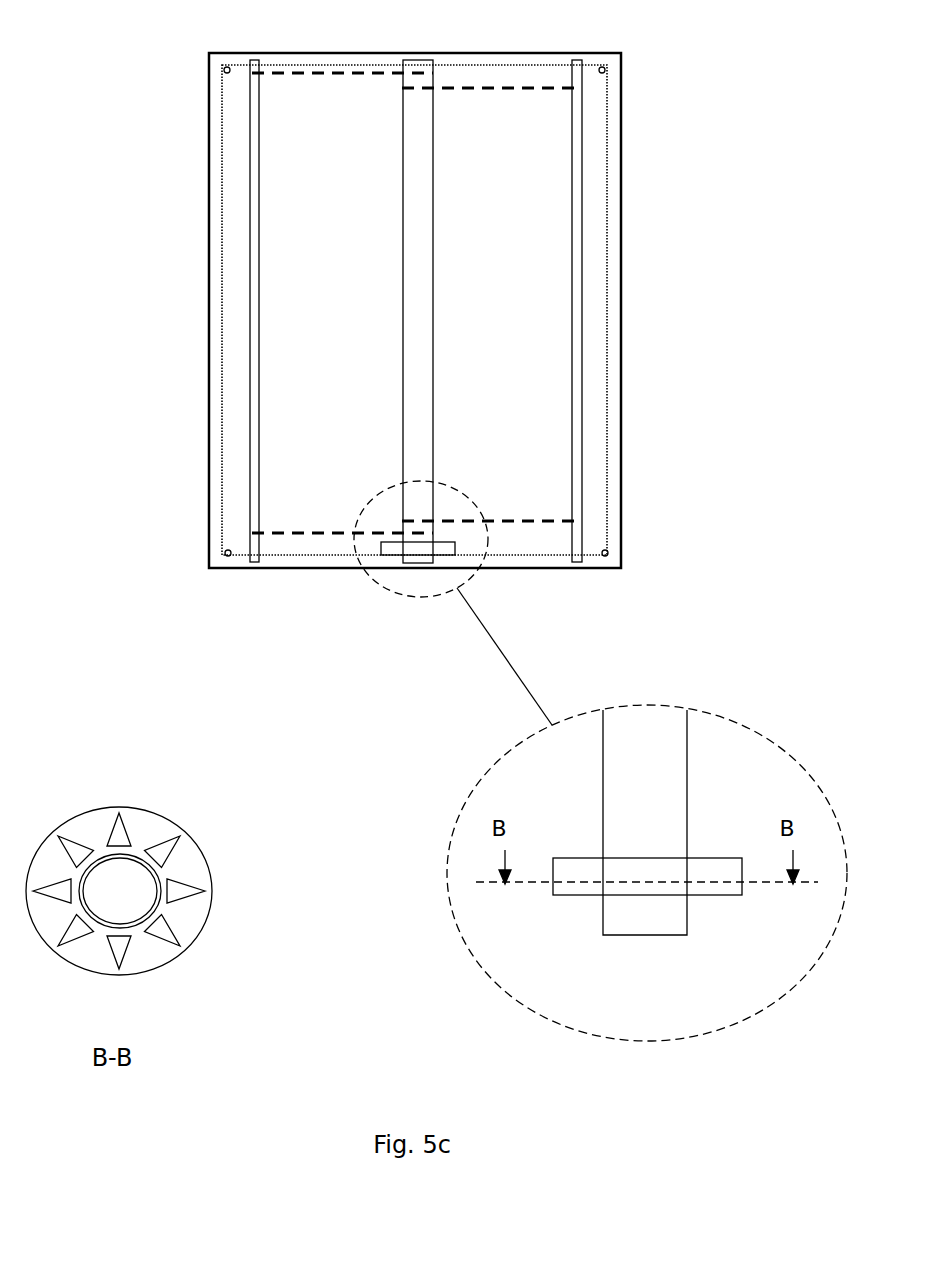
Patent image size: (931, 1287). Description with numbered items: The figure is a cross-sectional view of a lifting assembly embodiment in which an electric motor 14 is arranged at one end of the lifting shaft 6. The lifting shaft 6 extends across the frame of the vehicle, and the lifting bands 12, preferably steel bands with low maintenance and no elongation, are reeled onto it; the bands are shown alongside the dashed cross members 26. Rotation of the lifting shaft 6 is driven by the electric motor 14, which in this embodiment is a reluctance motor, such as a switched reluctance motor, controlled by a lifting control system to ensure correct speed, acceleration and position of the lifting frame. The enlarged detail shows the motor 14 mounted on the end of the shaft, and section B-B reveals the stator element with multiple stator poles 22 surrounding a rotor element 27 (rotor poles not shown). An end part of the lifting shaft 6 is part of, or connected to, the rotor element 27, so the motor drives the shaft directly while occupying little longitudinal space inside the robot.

The lifting shaft 6 is at (422, 378).
The lifting band 12 is at (307, 73).
The electric motor 14 is at (389, 550).
The stator poles 22 is at (165, 930).
The cross members 26 is at (433, 73).
The rotor element 27 is at (132, 925).